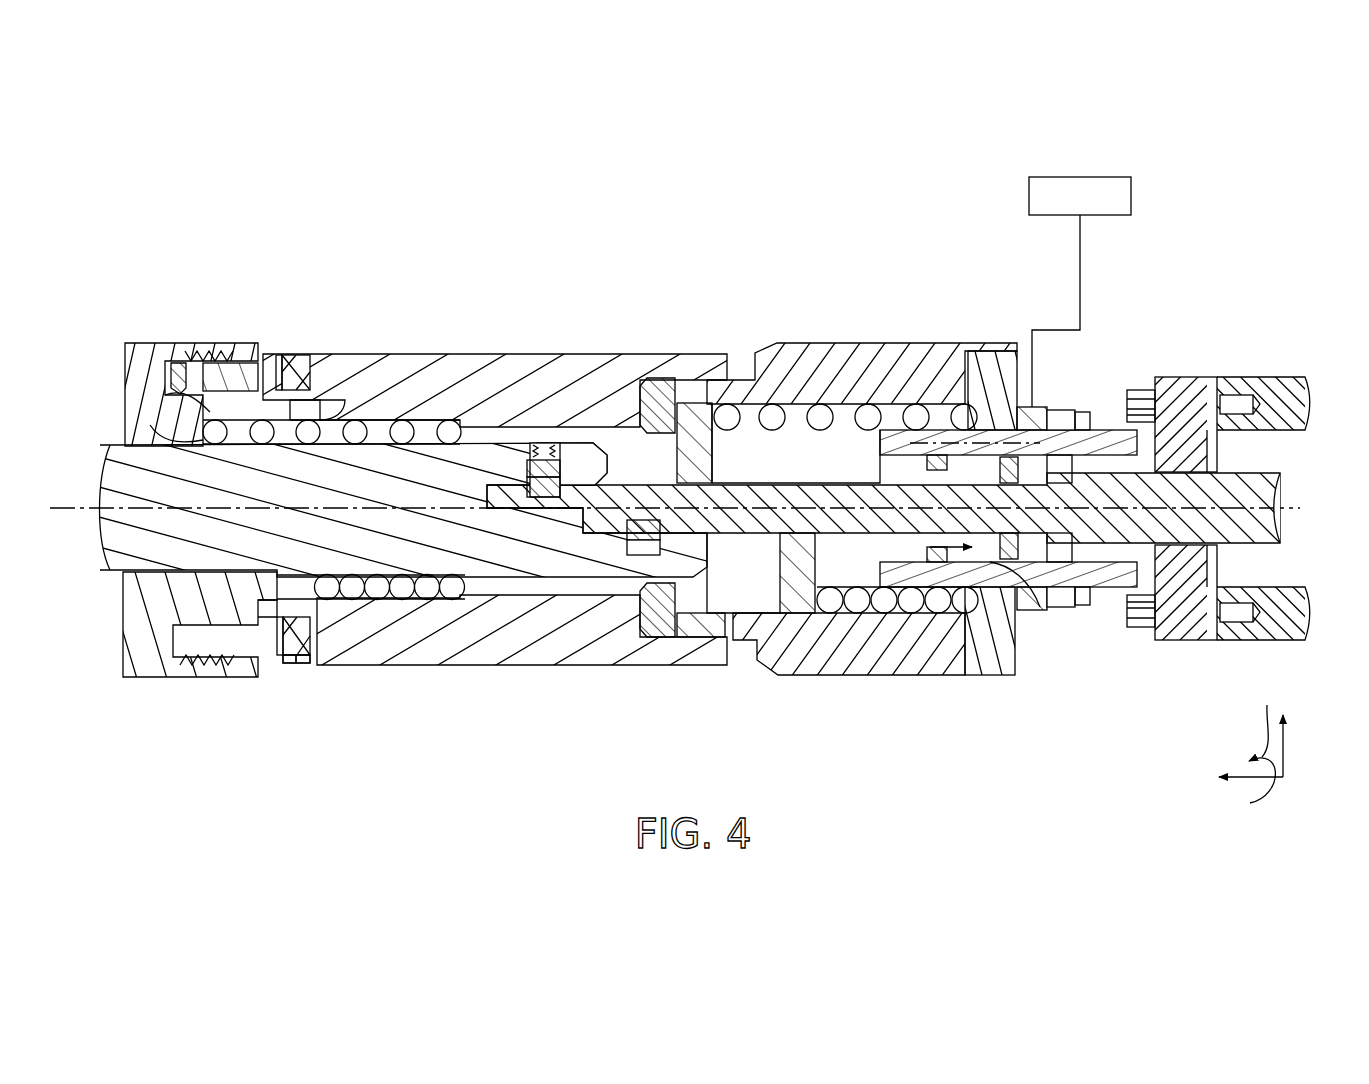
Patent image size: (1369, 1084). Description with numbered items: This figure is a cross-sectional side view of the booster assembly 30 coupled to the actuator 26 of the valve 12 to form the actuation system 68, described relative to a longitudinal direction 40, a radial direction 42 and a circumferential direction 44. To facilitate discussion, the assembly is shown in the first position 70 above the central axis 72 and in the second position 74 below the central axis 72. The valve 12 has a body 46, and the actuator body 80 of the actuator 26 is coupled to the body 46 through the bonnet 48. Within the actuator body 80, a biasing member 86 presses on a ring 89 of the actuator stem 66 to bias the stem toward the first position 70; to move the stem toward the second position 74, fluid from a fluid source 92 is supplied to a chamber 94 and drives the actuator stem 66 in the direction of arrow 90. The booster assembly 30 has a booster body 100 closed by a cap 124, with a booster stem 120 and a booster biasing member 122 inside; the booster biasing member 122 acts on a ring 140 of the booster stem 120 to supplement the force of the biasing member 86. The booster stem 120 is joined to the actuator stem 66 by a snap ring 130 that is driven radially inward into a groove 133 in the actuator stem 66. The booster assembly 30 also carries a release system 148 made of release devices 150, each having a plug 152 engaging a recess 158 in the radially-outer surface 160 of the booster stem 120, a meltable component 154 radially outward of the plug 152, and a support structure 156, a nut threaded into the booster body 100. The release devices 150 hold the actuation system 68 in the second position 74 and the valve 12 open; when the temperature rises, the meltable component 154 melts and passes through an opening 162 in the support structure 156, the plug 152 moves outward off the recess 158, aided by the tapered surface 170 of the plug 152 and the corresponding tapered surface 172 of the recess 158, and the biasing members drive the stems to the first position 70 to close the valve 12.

The valve 12 is at (1287, 295).
The actuator 26 is at (944, 268).
The booster assembly 30 is at (453, 307).
The longitudinal axis or direction 40 is at (1283, 777).
The lateral or radial axis or direction 42 is at (1285, 740).
The circumferential axis or direction 44 is at (1262, 740).
The body 46 is at (1250, 380).
The bonnet 48 is at (1180, 395).
The actuator stem 66 is at (1258, 524).
The actuation system 68 is at (752, 228).
The first position 70 is at (976, 327).
The central axis 72 is at (1122, 600).
The second position 74 is at (958, 691).
The actuator body 80 is at (822, 343).
The biasing member 86 is at (772, 412).
The ring 89 is at (713, 447).
The arrow 90 is at (880, 557).
The fluid source 92 is at (1080, 177).
The chamber 94 is at (1040, 607).
The booster body 100 is at (590, 355).
The booster stem 120 is at (365, 450).
The booster biasing member 122 is at (401, 428).
The cap 124 is at (172, 340).
The split or snap ring 130 is at (533, 487).
The groove 133 is at (575, 490).
The ring 140 is at (150, 425).
The release system 148 is at (298, 344).
The release device 150 is at (307, 669).
The plug 152 is at (275, 345).
The meltable component 154 is at (270, 650).
The support structure 156 is at (283, 665).
The recess 158 is at (175, 395).
The radially-outer surface 160 is at (233, 340).
The opening 162 is at (297, 665).
The tapered surface 170 is at (337, 352).
The tapered surface 172 is at (201, 340).